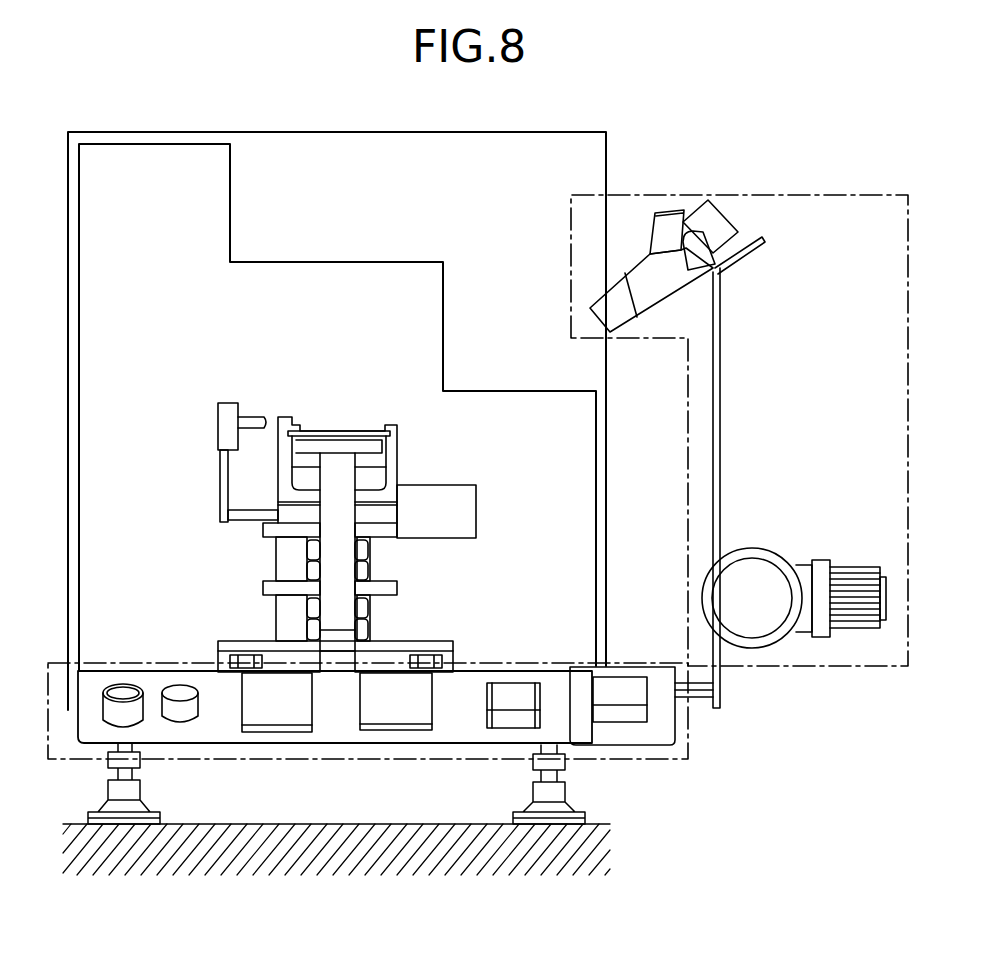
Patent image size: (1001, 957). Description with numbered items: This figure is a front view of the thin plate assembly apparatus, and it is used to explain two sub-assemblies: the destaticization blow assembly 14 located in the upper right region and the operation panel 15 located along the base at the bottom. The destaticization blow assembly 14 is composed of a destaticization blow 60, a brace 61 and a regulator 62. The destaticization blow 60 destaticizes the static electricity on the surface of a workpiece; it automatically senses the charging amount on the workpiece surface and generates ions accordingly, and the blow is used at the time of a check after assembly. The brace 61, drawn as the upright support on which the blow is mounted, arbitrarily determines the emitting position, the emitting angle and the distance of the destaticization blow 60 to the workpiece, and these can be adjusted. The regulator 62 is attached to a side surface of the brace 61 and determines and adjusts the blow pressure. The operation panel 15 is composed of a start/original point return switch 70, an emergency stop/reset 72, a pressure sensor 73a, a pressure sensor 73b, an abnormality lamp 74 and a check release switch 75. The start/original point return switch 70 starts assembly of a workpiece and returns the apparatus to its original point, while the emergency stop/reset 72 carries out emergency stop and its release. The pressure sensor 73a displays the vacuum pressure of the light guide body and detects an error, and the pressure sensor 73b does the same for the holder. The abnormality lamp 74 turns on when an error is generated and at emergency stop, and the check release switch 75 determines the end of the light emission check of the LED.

The destaticization blow assembly 14 is at (843, 195).
The operation panel 15 is at (150, 663).
The destaticization blow 60 is at (727, 212).
The brace 61 is at (721, 327).
The regulator 62 is at (760, 548).
The start/original point return switch 70 is at (510, 722).
The emergency stop/reset 72 is at (133, 716).
The pressure sensor 73a is at (263, 716).
The pressure sensor 73b is at (380, 717).
The abnormality lamp 74 is at (185, 716).
The check release switch 75 is at (620, 715).